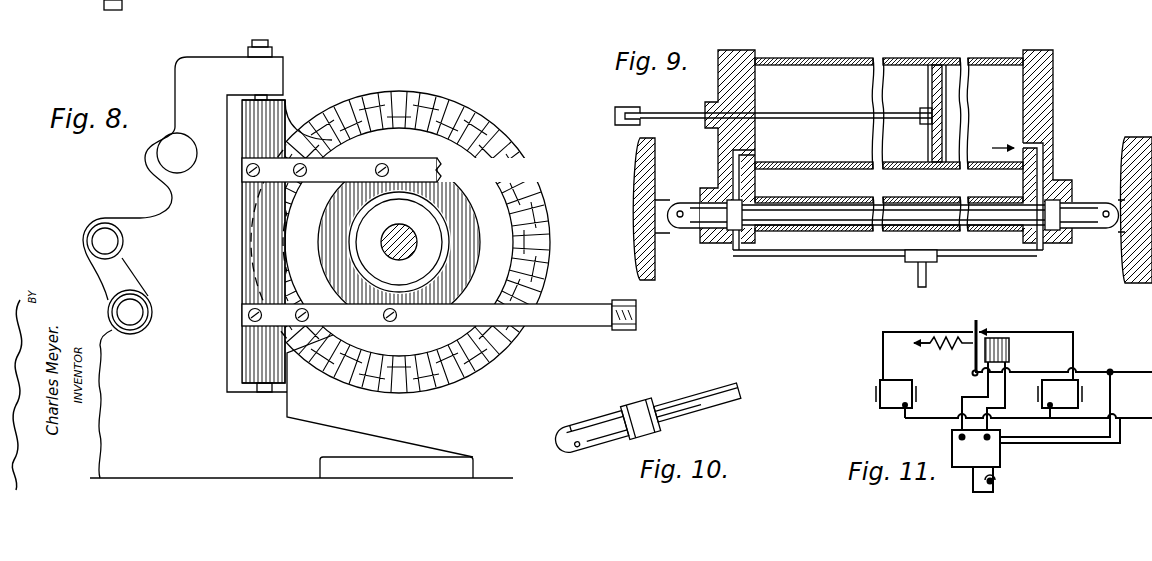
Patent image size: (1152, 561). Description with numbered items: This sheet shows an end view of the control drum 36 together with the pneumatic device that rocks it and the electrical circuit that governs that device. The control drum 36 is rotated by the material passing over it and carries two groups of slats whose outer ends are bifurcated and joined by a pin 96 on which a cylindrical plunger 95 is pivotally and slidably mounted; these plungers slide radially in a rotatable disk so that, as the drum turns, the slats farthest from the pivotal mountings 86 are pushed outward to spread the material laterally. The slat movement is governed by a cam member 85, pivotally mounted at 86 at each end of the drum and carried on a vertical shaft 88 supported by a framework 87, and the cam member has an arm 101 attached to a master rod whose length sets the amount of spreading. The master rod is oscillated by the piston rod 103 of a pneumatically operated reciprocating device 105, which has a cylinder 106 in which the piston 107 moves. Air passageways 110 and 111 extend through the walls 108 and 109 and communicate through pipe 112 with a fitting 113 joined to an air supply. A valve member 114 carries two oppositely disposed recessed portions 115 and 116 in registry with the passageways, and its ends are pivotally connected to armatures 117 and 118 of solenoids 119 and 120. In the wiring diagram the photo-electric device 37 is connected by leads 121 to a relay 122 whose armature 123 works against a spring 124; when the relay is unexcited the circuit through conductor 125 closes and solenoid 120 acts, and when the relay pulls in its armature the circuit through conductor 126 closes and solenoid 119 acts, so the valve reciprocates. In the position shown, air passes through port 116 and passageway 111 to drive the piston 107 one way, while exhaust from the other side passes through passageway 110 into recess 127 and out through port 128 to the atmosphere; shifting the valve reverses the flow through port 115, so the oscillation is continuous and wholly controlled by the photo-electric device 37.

In FIG. 8, the control drum 36 is at (501, 111).
In FIG. 8, the cam member 85 is at (87, 8).
In FIG. 8, the pivotal mounting 86 is at (270, 48).
In FIG. 8, the framework 87 is at (156, 212).
In FIG. 8, the vertical shaft 88 is at (263, 393).
In FIG. 8, the cylindrical plunger 95 is at (557, 270).
In FIG. 8, the pin 96 is at (543, 203).
In FIG. 8, the arm 101 is at (552, 326).
In FIG. 9, the piston rod 103 is at (672, 106).
In FIG. 9, the pneumatically operated reciprocating device 105 is at (1042, 87).
In FIG. 9, the cylinder 106 is at (999, 58).
In FIG. 9, the piston 107 is at (935, 65).
In FIG. 9, the wall 108 is at (1046, 131).
In FIG. 9, the wall 109 is at (718, 150).
In FIG. 9, the air passageway 110 is at (1025, 146).
In FIG. 9, the air passageway 111 is at (752, 152).
In FIG. 9, the pipe 112 is at (815, 257).
In FIG. 9, the fitting 113 is at (926, 273).
In FIG. 9, the valve member 114 is at (717, 244).
In FIG. 10, the valve member 114 is at (688, 372).
In FIG. 9, the recessed portion 115 is at (1058, 243).
In FIG. 9, the recessed portion 116 is at (738, 232).
In FIG. 10, the recessed portion 116 is at (585, 413).
In FIG. 9, the armature 117 is at (1118, 230).
In FIG. 9, the armature 118 is at (670, 232).
In FIG. 9, the solenoid 119 is at (1127, 160).
In FIG. 11, the solenoid 119 is at (1046, 392).
In FIG. 9, the solenoid 120 is at (648, 188).
In FIG. 11, the solenoid 120 is at (900, 392).
In FIG. 11, the leads 121 is at (962, 404).
In FIG. 11, the relay 122 is at (1009, 345).
In FIG. 11, the armature 123 is at (979, 325).
In FIG. 11, the spring 124 is at (943, 358).
In FIG. 11, the conductor 125 is at (883, 352).
In FIG. 11, the conductor 126 is at (1068, 332).
In FIG. 9, the recess 127 is at (1030, 207).
In FIG. 10, the recess 127 is at (637, 394).
In FIG. 9, the port 128 is at (782, 205).
In FIG. 11, the photo-electric device 37 is at (1000, 483).